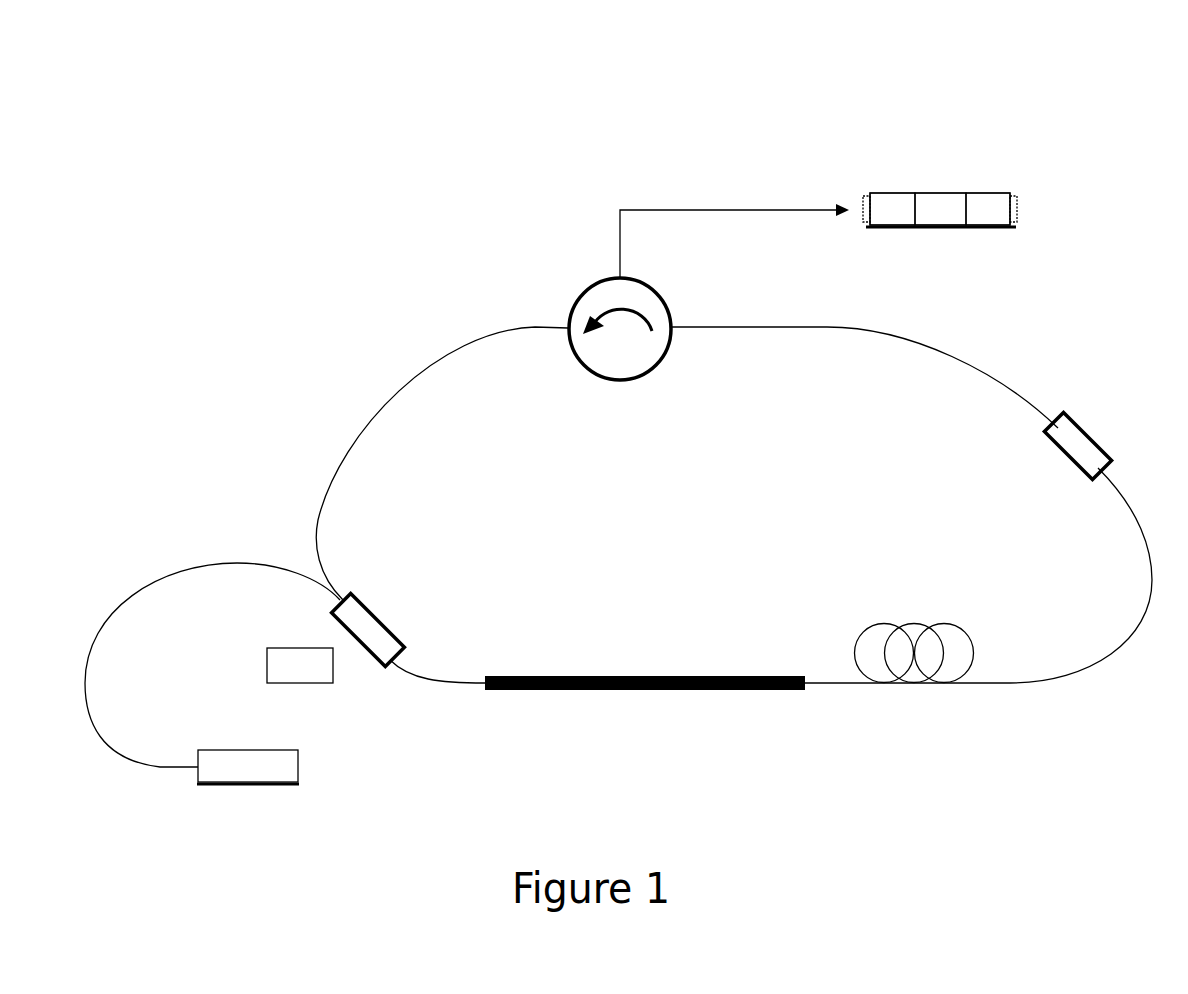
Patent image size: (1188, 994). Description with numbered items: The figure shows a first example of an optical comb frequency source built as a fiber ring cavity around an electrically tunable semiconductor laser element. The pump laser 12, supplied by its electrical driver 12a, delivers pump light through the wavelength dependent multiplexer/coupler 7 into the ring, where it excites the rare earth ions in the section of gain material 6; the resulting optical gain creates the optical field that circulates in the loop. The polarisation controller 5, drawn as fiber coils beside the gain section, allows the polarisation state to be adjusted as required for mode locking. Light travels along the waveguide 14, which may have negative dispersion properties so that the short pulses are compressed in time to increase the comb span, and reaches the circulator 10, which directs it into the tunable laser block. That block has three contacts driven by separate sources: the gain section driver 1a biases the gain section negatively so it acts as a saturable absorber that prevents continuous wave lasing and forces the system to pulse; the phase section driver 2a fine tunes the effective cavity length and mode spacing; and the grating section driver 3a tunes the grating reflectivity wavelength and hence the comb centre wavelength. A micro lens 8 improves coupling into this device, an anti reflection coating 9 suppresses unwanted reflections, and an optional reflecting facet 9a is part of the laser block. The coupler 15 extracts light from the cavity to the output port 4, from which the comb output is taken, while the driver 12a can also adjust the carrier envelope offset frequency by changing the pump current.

The gain section driver 1a is at (889, 182).
The phase section driver 2a is at (940, 182).
The grating section driver 3a is at (991, 182).
The output port 4 is at (1052, 422).
The polarisation controller 5 is at (907, 635).
The section of gain material 6 is at (645, 654).
The wavelength dependent multiplexer/coupler 7 is at (408, 634).
The micro lens 8 is at (734, 241).
The anti reflection coating 9 is at (955, 205).
The reflecting facet 9a is at (927, 194).
The circulator 10 is at (637, 313).
The pump laser 12 is at (212, 673).
The electrical driver for pump laser 12a is at (250, 740).
The waveguide 14 is at (687, 463).
The coupler 15 is at (1101, 440).